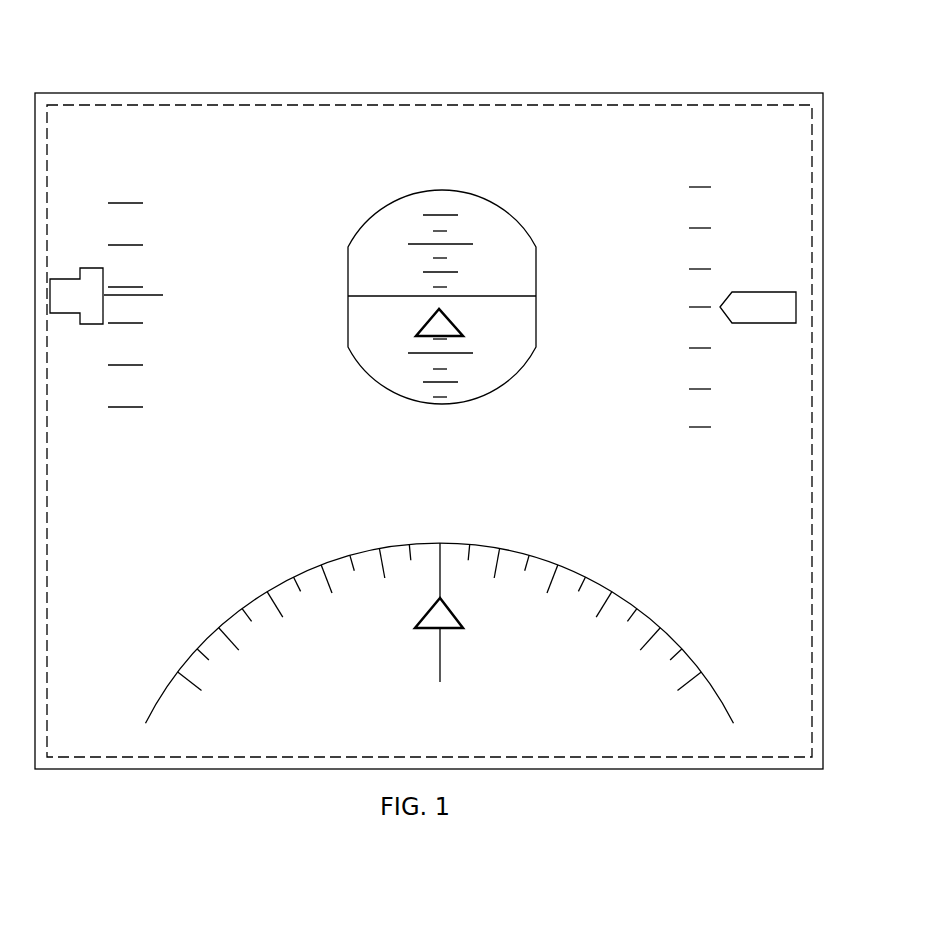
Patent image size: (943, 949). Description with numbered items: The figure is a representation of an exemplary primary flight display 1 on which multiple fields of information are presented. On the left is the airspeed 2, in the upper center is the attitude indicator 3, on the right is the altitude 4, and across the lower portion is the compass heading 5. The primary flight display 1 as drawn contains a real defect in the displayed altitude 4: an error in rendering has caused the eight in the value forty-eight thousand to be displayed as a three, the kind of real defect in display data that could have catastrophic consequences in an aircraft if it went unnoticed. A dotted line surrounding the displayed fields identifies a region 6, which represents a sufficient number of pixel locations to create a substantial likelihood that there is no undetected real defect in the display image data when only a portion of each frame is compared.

The primary flight display 1 is at (85, 87).
The airspeed 2 is at (88, 220).
The attitude indicator 3 is at (492, 202).
The altitude 4 is at (673, 192).
The compass heading 5 is at (517, 547).
The region 6 is at (150, 757).